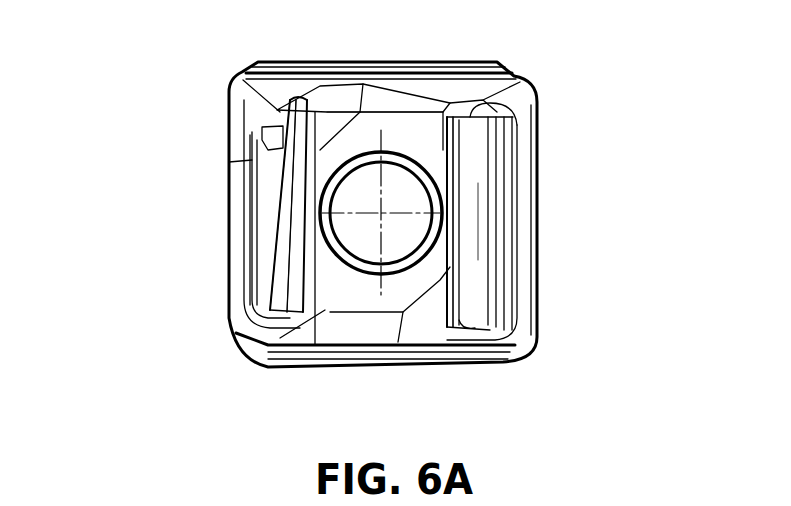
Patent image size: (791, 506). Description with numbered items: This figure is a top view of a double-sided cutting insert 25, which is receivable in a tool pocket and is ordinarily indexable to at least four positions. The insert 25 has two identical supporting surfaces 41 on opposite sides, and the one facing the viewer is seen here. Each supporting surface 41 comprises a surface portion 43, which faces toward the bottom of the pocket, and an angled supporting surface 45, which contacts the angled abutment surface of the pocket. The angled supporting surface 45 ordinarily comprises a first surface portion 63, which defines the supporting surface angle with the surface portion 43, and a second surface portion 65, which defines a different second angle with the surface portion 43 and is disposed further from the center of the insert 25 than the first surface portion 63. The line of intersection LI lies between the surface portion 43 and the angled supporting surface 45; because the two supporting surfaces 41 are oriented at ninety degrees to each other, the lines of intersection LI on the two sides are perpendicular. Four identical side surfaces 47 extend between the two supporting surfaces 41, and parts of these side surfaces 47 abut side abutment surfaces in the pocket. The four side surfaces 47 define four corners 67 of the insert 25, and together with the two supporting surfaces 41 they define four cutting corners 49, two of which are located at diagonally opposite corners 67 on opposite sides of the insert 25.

The double-sided insert 25 is at (173, 123).
The supporting surface 41 is at (320, 250).
The surface portion 43 is at (418, 142).
The angled supporting surface 45 is at (297, 288).
The side surface 47 is at (463, 67).
The cutting corner 49 is at (497, 66).
The first surface portion 63 is at (297, 263).
The second surface portion 65 is at (280, 298).
The corner 67 is at (243, 80).
The line of intersection LI is at (478, 183).